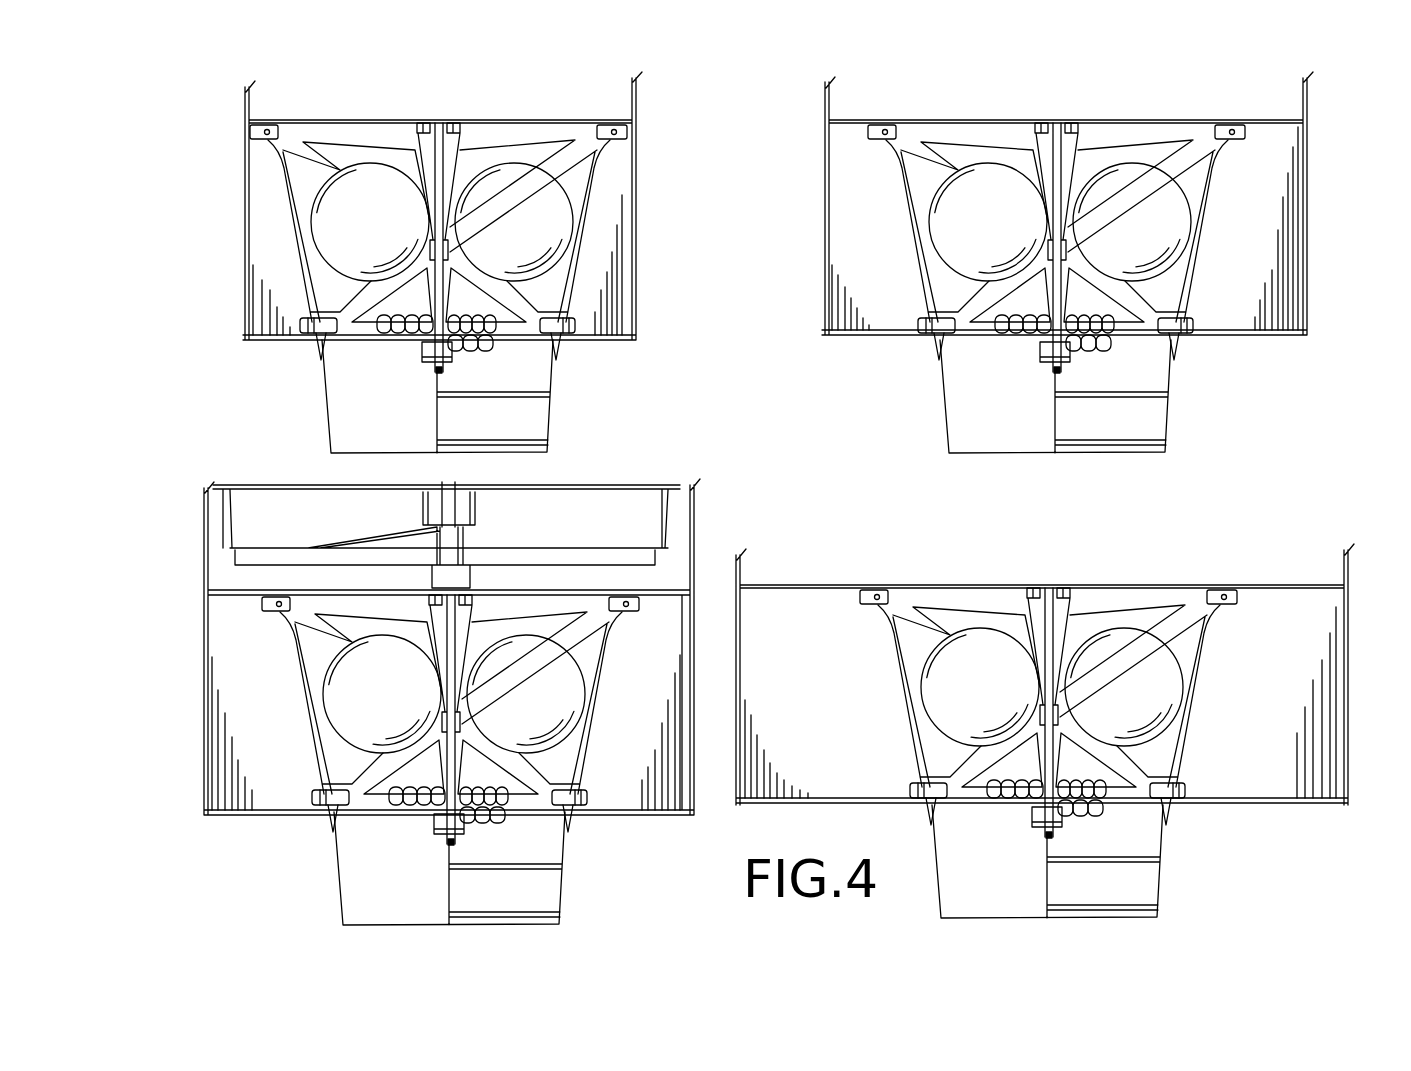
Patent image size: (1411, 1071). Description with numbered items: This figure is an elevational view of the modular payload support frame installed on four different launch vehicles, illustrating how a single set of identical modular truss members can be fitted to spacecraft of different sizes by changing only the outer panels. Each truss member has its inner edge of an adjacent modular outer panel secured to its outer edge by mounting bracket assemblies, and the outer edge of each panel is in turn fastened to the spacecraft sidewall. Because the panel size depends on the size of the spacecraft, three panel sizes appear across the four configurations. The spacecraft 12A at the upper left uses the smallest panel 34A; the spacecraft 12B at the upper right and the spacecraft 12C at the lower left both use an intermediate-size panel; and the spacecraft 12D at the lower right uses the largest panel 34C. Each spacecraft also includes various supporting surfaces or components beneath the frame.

The spacecraft 12A is at (634, 187).
The spacecraft 12B is at (1308, 173).
The spacecraft 12C is at (698, 522).
The spacecraft 12D is at (1347, 557).
The outer panel 34A is at (603, 263).
The outer panel 34C is at (1300, 690).